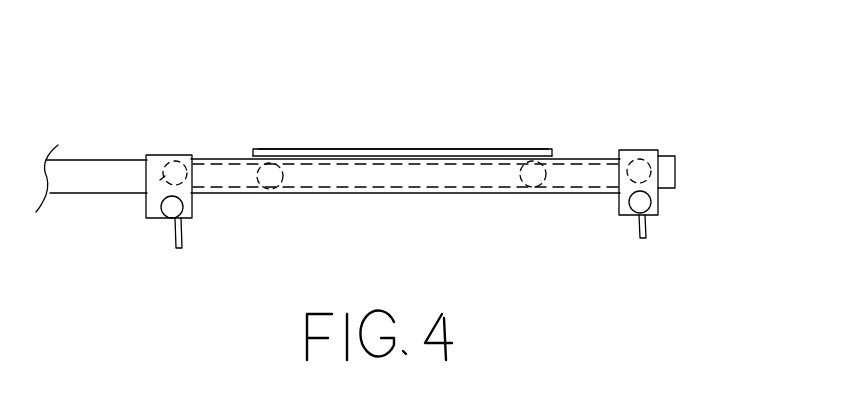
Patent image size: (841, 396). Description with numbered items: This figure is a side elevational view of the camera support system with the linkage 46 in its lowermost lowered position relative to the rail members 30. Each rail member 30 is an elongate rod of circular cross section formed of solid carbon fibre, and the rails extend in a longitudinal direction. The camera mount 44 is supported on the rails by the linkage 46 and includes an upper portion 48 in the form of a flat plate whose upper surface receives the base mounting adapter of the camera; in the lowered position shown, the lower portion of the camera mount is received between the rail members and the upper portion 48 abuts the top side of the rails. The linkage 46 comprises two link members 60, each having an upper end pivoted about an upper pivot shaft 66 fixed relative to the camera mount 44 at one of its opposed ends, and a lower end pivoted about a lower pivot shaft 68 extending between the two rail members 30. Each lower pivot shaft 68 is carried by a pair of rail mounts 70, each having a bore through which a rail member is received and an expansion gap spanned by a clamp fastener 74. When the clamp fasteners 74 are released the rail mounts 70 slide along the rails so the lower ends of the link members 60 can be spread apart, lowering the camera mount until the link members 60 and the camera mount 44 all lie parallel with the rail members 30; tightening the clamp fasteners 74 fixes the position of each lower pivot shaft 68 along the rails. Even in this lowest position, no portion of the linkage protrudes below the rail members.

The rail member 30 is at (77, 190).
The camera mount 44 is at (478, 147).
The linkage 46 is at (582, 189).
The upper portion 48 is at (505, 150).
The link member 60 is at (222, 162).
The upper pivot shaft 66 is at (285, 183).
The lower pivot shaft 68 is at (652, 177).
The rail mount 70 is at (152, 155).
The clamp fastener 74 is at (173, 212).